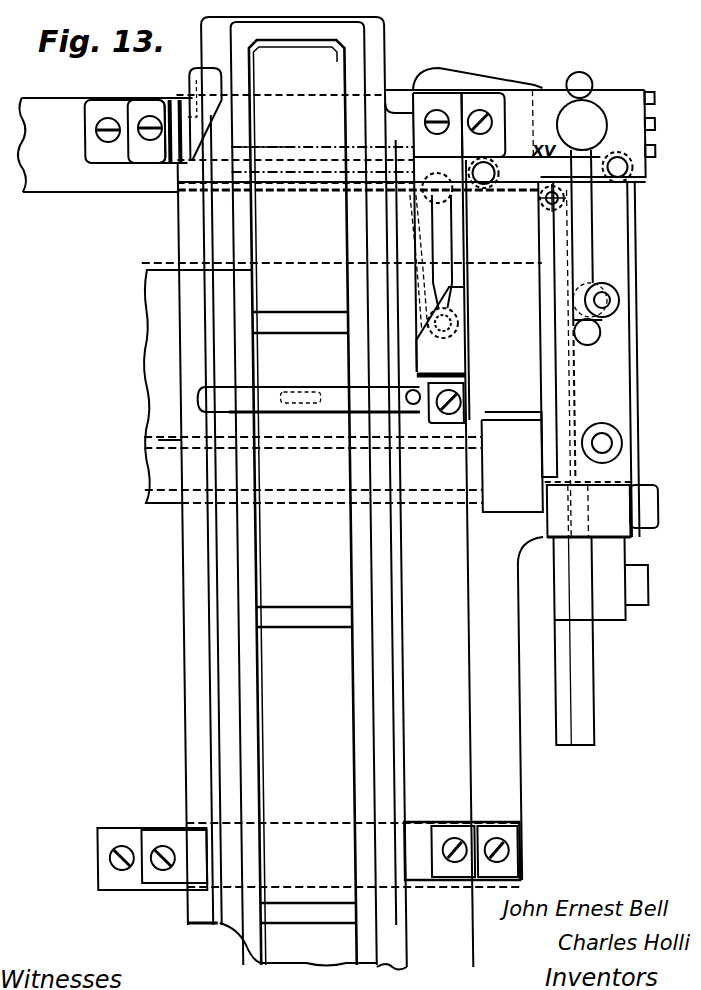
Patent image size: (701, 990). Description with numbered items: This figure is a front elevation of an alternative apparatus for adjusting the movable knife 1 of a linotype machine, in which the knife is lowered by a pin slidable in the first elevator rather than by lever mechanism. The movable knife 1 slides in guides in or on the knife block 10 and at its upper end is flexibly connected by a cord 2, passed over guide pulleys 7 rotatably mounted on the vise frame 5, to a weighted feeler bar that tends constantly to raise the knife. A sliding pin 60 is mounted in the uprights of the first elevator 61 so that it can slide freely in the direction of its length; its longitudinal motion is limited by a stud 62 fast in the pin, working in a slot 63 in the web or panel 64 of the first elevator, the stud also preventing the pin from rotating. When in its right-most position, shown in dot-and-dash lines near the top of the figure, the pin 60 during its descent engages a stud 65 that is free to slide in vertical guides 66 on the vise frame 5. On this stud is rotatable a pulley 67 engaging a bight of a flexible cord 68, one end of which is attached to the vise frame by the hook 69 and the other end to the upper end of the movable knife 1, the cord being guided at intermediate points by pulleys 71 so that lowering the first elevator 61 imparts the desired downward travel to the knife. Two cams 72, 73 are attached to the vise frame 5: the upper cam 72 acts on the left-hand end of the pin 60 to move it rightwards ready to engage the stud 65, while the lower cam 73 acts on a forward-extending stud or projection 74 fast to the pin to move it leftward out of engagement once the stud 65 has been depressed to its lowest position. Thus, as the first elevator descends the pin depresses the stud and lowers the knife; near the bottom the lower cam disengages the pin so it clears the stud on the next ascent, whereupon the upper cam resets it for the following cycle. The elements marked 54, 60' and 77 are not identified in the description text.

The movable knife 1 is at (582, 697).
The cord 2 is at (599, 306).
The vise frame 5 is at (105, 145).
The guide pulleys 7 is at (544, 200).
The knife block 10 is at (558, 359).
The screw block 54 is at (451, 78).
The sliding pin 60 is at (275, 141).
The bracket 60' is at (308, 409).
The first elevator 61 is at (392, 32).
The stud 62 is at (285, 405).
The slot 63 is at (320, 385).
The web or panel 64 is at (299, 344).
The stud 65 is at (459, 320).
The vertical guides 66 is at (463, 248).
The pulley 67 is at (419, 208).
The flexible cord 68 is at (468, 231).
The hook 69 is at (384, 185).
The pulleys 71 is at (494, 165).
The upper cam 72 is at (201, 76).
The lower cam 73 is at (441, 355).
The stud or projection 74 is at (416, 405).
The roller 77 is at (638, 178).